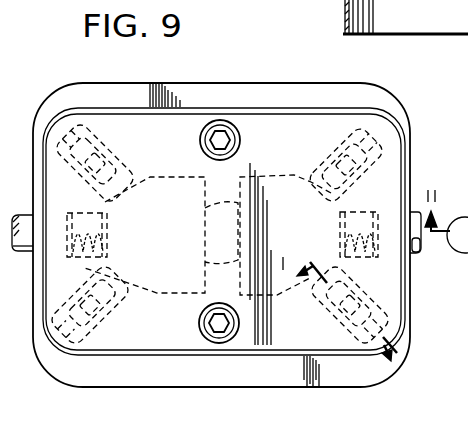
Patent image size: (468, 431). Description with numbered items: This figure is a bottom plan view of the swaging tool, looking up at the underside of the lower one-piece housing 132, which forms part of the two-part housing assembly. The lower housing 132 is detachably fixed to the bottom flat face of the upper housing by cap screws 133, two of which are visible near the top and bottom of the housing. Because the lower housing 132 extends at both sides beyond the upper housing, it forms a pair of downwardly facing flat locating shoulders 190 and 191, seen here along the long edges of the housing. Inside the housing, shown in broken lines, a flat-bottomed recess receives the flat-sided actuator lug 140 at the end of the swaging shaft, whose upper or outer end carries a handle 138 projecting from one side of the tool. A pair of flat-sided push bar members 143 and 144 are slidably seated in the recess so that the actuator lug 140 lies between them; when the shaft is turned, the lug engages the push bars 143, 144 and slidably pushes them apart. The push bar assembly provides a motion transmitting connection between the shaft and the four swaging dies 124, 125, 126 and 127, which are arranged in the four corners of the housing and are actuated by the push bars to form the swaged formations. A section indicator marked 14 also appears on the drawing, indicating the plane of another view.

The locating shoulder 190 is at (240, 90).
The locating shoulder 191 is at (242, 376).
The cap screw 133 is at (218, 118).
The swaging die 127 is at (103, 120).
The swaging die 126 is at (351, 133).
The swaging die 124 is at (98, 345).
The swaging die 125 is at (332, 362).
The push bar member 143 is at (188, 177).
The push bar member 144 is at (264, 175).
The actuator lug 140 is at (205, 268).
The handle 138 is at (22, 213).
The lower one-piece housing 132 is at (405, 172).
The section line 14 is at (338, 317).